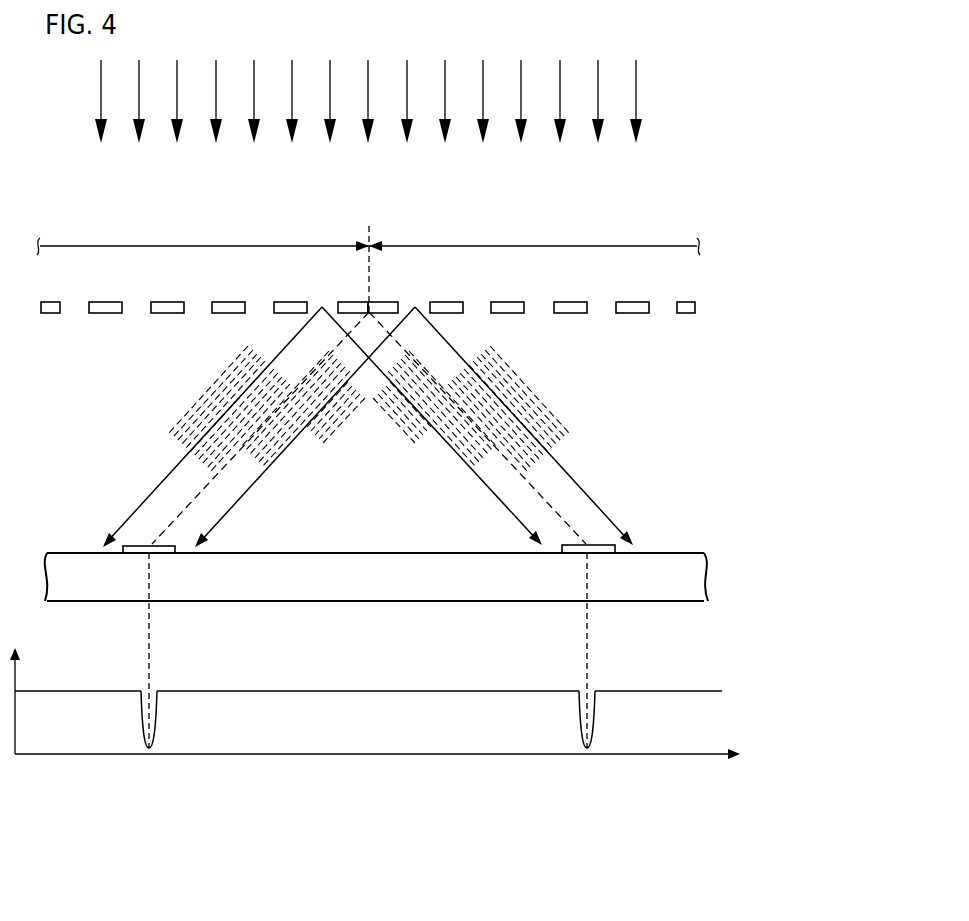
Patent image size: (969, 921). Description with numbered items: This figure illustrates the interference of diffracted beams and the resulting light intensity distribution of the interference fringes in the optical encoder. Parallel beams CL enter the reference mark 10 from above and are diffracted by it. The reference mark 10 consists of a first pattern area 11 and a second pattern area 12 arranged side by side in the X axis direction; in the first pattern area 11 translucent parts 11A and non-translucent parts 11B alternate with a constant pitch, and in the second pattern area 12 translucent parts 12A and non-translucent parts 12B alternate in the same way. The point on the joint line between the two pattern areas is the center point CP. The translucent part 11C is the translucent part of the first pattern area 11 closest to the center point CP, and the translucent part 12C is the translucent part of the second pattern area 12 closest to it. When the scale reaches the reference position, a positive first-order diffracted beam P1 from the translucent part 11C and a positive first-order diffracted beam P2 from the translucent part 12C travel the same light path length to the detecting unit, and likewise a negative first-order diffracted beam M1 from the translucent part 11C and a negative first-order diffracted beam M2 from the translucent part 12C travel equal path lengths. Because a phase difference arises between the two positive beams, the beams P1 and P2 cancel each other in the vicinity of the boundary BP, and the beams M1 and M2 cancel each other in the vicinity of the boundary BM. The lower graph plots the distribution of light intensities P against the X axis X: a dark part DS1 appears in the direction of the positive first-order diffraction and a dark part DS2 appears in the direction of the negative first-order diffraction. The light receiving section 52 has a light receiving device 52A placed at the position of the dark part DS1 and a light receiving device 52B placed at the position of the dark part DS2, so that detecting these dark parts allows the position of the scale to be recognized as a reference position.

The parallel beams CL is at (664, 97).
The second pattern area 12 is at (94, 246).
The first pattern area 11 is at (637, 246).
The center point CP is at (369, 255).
The translucent part 12C is at (318, 303).
The translucent part 11C is at (419, 303).
The reference mark 10 is at (415, 324).
The translucent part 12A is at (70, 316).
The non-translucent part 12B is at (103, 314).
The non-translucent part 11B is at (634, 314).
The translucent part 11A is at (670, 316).
The negative first-order diffracted beam M2 is at (160, 482).
The negative first-order diffracted beam M1 is at (241, 497).
The positive first-order diffracted beam P2 is at (497, 498).
The positive first-order diffracted beam P1 is at (577, 483).
The boundary BM is at (158, 540).
The boundary BP is at (580, 540).
The light receiving section 52 is at (720, 577).
The light receiving device 52B is at (165, 553).
The light receiving device 52A is at (572, 553).
The light intensities P is at (14, 688).
The X axis X is at (386, 756).
The dark part DS2 is at (149, 671).
The dark part DS1 is at (587, 671).